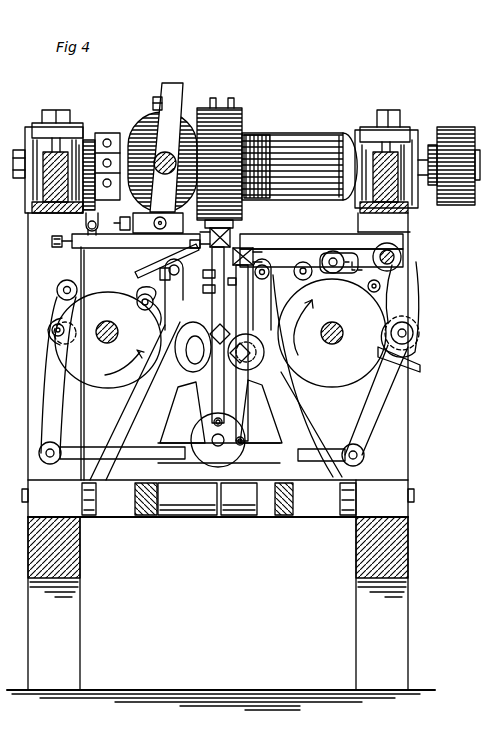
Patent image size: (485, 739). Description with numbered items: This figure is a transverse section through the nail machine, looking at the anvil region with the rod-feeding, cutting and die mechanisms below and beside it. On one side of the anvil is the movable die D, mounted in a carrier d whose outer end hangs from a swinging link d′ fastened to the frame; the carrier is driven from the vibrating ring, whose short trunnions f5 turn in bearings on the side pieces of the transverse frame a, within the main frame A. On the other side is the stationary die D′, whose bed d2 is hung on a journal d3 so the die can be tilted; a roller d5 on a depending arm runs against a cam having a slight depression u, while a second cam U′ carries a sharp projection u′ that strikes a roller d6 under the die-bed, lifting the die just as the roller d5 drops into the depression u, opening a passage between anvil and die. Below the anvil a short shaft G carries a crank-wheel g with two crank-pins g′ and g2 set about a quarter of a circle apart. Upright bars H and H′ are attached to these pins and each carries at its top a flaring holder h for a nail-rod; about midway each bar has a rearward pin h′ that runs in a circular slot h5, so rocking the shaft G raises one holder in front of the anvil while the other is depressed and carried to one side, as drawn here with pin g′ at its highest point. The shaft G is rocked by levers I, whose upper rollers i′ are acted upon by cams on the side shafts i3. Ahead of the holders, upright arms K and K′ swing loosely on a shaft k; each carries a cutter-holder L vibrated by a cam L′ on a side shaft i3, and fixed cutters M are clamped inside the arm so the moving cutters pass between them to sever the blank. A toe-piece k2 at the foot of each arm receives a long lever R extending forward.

The frame A is at (221, 461).
The shaft k is at (22, 495).
The toe-piece k2 is at (215, 499).
The transverse frame a is at (52, 188).
The swinging link d′ is at (82, 209).
The movable die D is at (198, 222).
The trunnions f5 is at (160, 158).
The guide or holder h is at (220, 230).
The carrier d is at (105, 245).
The depression u is at (72, 243).
The die-bed d2 is at (327, 240).
The journal d3 is at (397, 252).
The roller d6 is at (363, 276).
The projection u′ is at (383, 290).
The roller d5 is at (415, 338).
The second cam U′ is at (386, 352).
The cutter-holder L is at (160, 262).
The fixed cutter M is at (140, 300).
The stationary die D′ is at (218, 268).
The upright bar H is at (216, 336).
The upright bar H′ is at (240, 355).
The pin h′ is at (217, 338).
The cam L′ is at (104, 340).
The shafts i3 is at (219, 340).
The anti-friction rollers i′ is at (52, 331).
The long lever R is at (143, 517).
The levers I is at (226, 373).
The upright arm K′ is at (185, 401).
The upright arm K is at (291, 376).
The shaft G is at (222, 462).
The crank-wheel g is at (215, 446).
The crank-pin g′ is at (215, 425).
The crank-pin g2 is at (240, 445).
The circular slot h5 is at (200, 330).